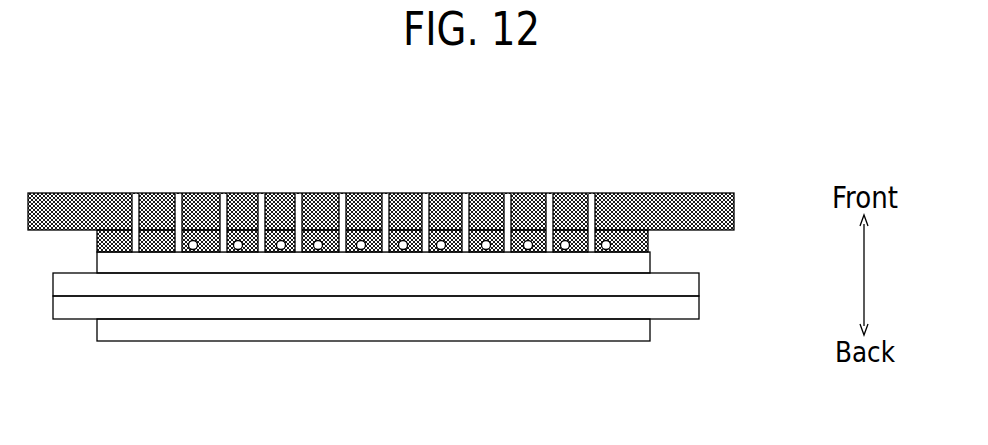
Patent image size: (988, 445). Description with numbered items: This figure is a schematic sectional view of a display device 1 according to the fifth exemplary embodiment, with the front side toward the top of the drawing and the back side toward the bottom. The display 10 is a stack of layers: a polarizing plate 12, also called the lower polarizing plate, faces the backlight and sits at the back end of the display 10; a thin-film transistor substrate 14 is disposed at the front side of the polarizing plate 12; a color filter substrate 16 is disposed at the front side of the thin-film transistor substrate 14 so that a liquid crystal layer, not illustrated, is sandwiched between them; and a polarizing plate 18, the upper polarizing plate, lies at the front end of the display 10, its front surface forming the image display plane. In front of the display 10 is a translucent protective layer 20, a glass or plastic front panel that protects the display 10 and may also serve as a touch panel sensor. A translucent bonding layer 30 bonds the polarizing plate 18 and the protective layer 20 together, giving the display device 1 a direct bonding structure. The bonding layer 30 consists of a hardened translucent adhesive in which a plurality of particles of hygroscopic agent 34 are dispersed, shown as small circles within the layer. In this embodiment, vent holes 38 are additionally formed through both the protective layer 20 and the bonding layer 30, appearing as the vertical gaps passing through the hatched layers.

The display device 1 is at (765, 182).
The display 10 is at (760, 237).
The polarizing plate 12 is at (651, 328).
The thin-film transistor substrate 14 is at (699, 303).
The color filter substrate 16 is at (699, 284).
The polarizing plate 18 is at (651, 259).
The protective layer 20 is at (76, 193).
The bonding layer 30 is at (92, 242).
The hygroscopic agent 34 is at (238, 249).
The vent holes 38 is at (342, 193).